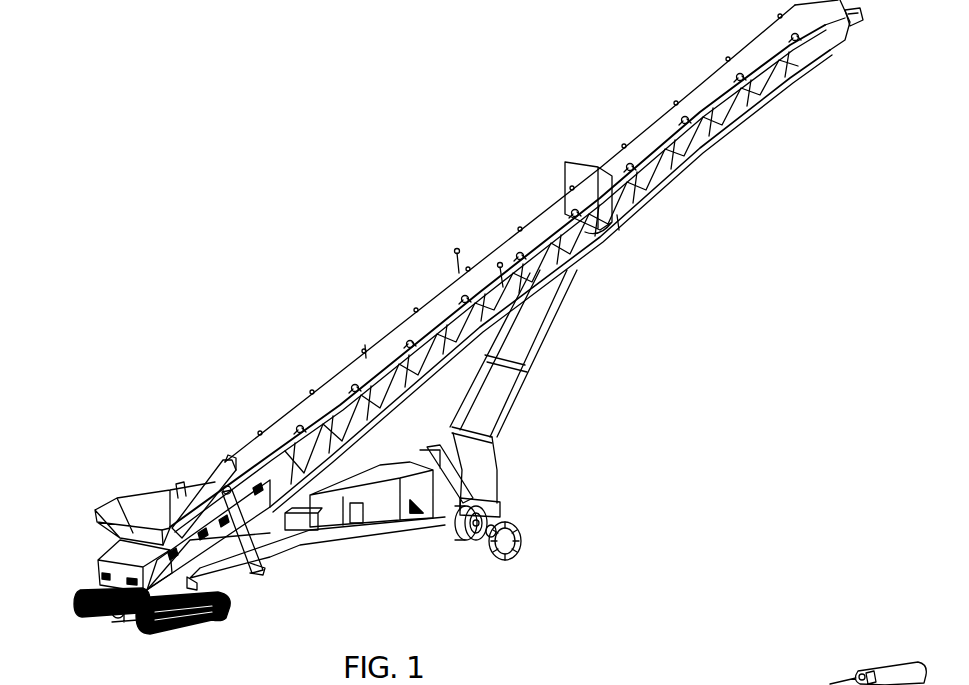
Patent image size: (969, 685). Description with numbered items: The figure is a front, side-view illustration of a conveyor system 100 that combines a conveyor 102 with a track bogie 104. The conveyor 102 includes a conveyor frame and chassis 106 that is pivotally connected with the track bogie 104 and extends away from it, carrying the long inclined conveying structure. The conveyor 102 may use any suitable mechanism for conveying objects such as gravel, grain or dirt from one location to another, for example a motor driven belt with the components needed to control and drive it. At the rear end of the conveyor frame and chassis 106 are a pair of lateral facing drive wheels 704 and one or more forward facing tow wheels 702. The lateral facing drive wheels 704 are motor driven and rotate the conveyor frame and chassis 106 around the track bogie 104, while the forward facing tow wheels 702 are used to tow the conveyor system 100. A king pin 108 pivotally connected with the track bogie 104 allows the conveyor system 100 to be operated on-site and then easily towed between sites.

The conveyor system 100 is at (135, 70).
The conveyor 102 is at (392, 343).
The track bogie 104 is at (217, 606).
The conveyor frame and chassis 106 is at (365, 535).
The king pin 108 is at (116, 615).
The forward facing tow wheels 702 is at (467, 541).
The lateral facing drive wheels 704 is at (507, 560).